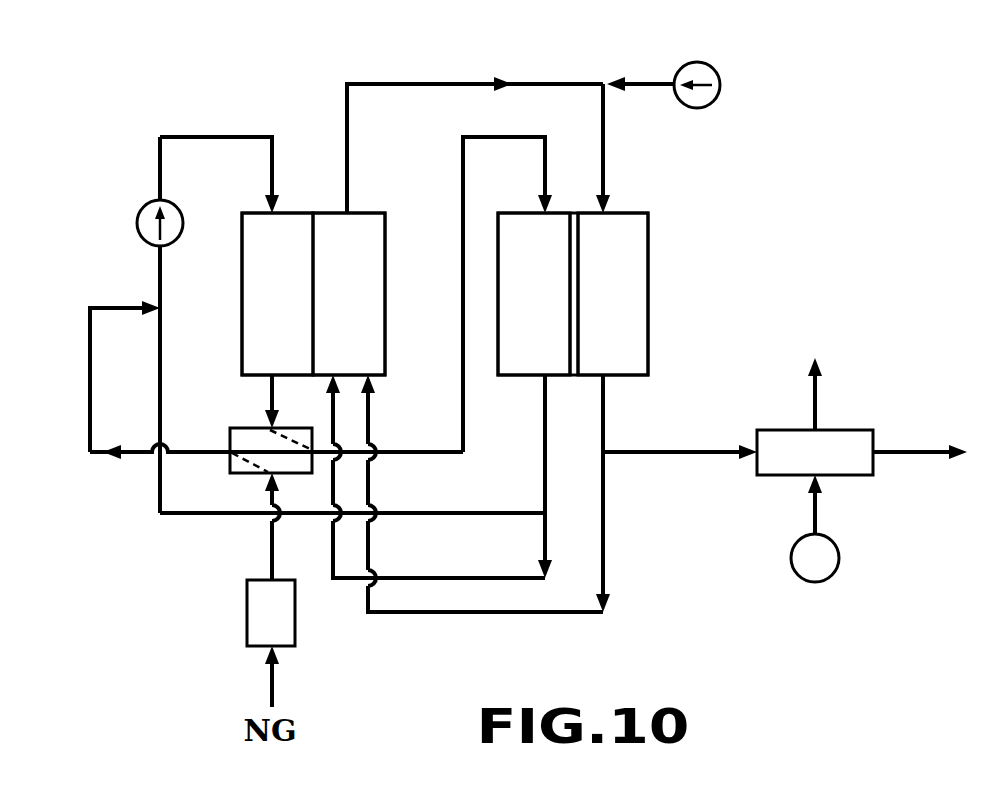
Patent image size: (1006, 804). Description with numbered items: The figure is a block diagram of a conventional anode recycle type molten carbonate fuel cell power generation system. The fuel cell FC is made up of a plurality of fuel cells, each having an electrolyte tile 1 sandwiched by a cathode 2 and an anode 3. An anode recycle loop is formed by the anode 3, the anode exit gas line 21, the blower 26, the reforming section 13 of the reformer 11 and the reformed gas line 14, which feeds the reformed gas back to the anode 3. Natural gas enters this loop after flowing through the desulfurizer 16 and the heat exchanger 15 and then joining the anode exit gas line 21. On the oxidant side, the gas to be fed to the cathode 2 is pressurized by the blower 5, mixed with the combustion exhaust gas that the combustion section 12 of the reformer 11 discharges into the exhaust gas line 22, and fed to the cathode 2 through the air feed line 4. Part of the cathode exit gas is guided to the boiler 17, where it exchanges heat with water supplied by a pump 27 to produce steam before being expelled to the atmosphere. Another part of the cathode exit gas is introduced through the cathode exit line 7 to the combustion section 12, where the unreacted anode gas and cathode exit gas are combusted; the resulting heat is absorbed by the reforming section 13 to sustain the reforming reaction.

The electrolyte tile 1 is at (575, 218).
The cathode 2 is at (649, 318).
The anode 3 is at (518, 228).
The air feed line 4 is at (605, 128).
The blower 5 is at (722, 97).
The cathode exit line 7 is at (605, 425).
The reformer 11 is at (312, 244).
The combustion section 12 is at (372, 310).
The reforming section 13 is at (253, 295).
The reformed gas line 14 is at (268, 388).
The heat exchanger 15 is at (250, 436).
The desulfurizer 16 is at (255, 617).
The boiler 17 is at (843, 427).
The anode exit gas line 21 is at (543, 485).
The exhaust gas line 22 is at (550, 82).
The blower 26 is at (138, 221).
The pump 27 is at (835, 572).
The fuel cell FC is at (620, 252).